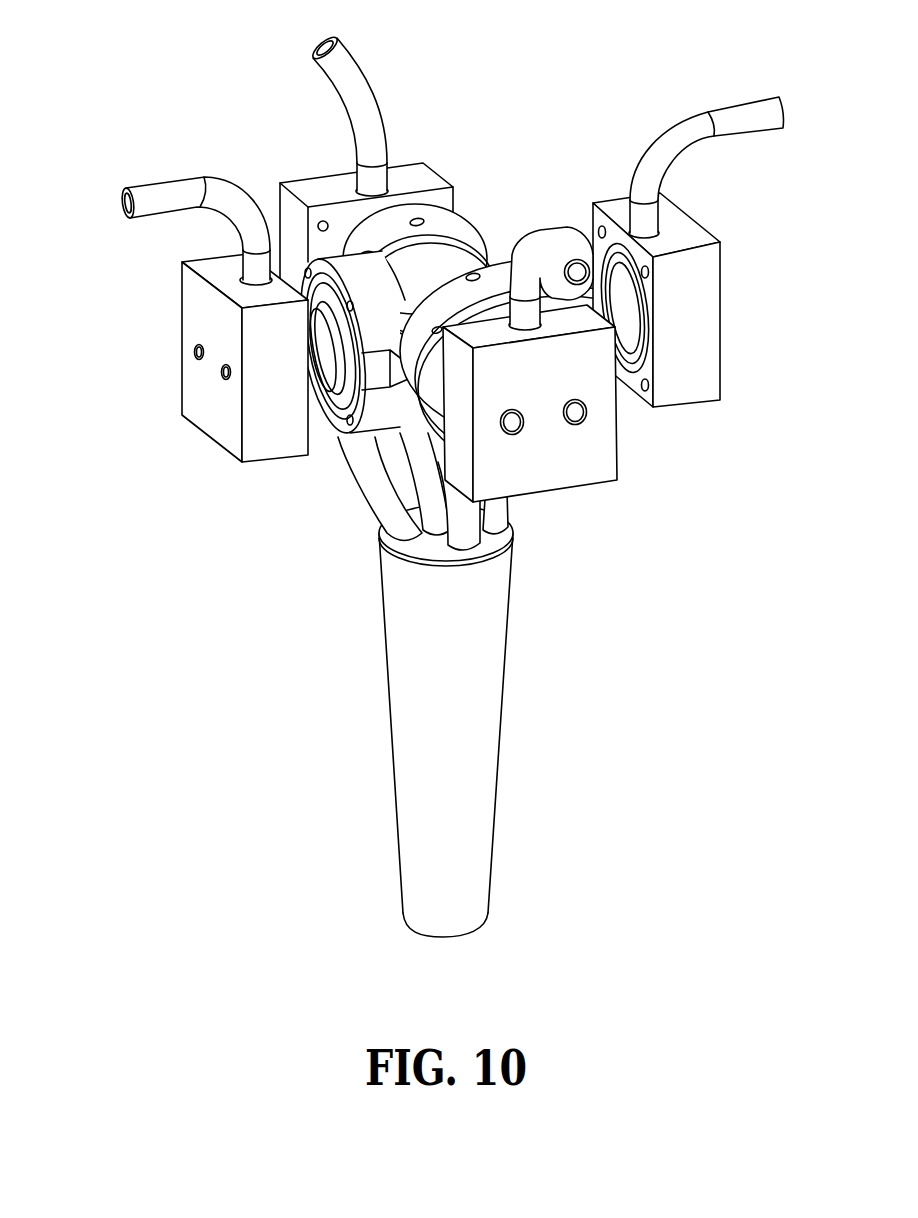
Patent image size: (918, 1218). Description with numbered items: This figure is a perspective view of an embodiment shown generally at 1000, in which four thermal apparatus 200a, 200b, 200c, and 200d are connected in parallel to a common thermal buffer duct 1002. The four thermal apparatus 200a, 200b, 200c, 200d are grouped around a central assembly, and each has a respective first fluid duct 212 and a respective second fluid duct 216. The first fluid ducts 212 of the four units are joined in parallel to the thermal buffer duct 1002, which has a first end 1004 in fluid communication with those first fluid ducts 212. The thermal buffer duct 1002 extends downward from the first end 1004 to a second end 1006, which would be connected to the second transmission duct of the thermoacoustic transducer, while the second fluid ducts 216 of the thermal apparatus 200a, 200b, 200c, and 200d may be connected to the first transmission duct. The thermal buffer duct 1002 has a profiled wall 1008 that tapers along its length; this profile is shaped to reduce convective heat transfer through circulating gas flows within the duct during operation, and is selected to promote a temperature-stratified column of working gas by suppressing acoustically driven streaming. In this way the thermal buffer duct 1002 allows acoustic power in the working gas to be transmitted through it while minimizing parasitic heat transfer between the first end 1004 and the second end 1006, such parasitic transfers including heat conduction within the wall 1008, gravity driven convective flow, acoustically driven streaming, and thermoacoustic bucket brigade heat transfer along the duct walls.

The embodiment 1000 is at (422, 501).
The thermal apparatus 200a is at (176, 158).
The thermal apparatus 200b is at (421, 136).
The thermal apparatus 200c is at (608, 175).
The thermal apparatus 200d is at (596, 503).
The second fluid duct 216 is at (243, 193).
The first fluid duct 212 is at (382, 540).
The thermal buffer duct 1002 is at (434, 750).
The first end 1004 is at (514, 540).
The second end 1006 is at (455, 938).
The profiled wall 1008 is at (387, 707).